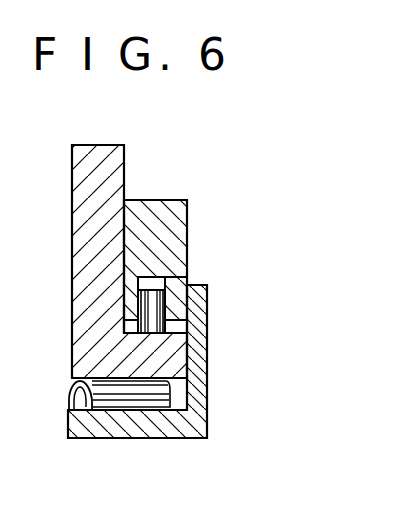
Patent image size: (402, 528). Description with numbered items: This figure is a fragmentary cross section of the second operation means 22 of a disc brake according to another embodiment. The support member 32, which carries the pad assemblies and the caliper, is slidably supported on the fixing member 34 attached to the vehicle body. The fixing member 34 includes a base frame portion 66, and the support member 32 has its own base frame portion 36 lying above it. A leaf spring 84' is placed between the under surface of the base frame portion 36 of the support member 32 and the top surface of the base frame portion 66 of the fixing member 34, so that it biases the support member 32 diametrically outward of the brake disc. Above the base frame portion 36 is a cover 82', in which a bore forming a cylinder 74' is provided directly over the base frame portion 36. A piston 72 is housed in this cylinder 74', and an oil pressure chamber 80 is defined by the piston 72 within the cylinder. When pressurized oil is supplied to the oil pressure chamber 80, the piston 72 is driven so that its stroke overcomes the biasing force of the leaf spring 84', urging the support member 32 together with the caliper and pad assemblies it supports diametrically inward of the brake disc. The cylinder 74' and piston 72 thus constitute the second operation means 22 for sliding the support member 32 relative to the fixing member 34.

The support member 32 is at (82, 250).
The cover 82' is at (181, 263).
The oil pressure chamber 80 is at (185, 261).
The cylinder 74' is at (110, 303).
The second operation means 22 is at (216, 294).
The base frame portion of the support member 36 is at (173, 346).
The piston 72 is at (150, 324).
The fixing member 34 is at (198, 373).
The leaf spring 84' is at (91, 394).
The base frame portion of the fixing member 66 is at (126, 425).